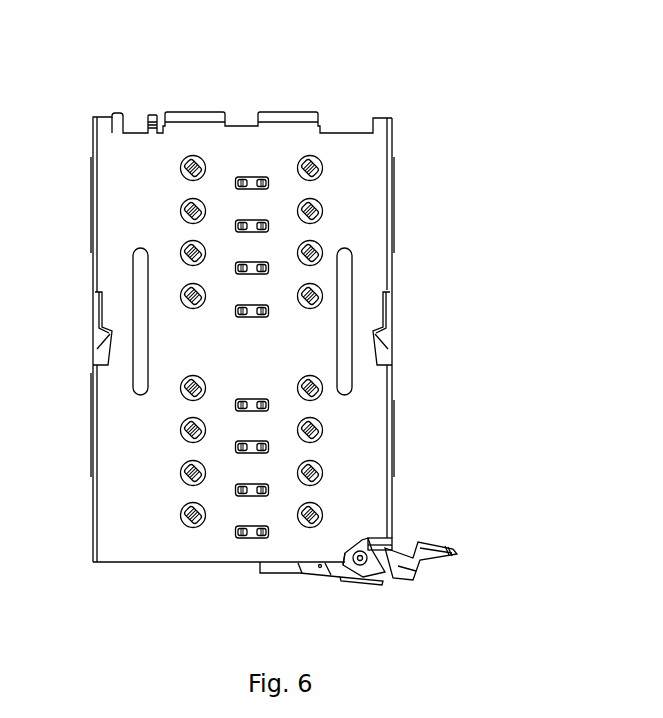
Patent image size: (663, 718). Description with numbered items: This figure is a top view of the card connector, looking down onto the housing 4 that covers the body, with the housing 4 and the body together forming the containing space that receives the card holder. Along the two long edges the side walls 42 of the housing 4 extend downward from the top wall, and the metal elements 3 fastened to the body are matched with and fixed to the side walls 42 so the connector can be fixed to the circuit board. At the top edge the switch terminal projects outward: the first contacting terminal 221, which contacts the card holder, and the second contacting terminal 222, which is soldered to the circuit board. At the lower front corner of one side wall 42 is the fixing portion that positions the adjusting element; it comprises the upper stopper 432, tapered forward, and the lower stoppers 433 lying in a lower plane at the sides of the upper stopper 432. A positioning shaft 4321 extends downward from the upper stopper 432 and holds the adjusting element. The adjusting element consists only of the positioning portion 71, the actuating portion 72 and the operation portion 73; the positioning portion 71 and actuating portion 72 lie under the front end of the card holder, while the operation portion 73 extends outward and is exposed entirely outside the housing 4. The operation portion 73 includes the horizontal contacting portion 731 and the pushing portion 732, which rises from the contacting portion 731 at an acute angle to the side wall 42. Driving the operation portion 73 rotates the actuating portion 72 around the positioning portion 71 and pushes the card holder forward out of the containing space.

The metal element 3 is at (253, 313).
The housing 4 is at (412, 328).
The side wall 42 is at (388, 482).
The first contacting terminal 221 is at (118, 118).
The second contacting terminal 222 is at (210, 83).
The lower stopper 433 is at (385, 545).
The upper stopper 432 is at (370, 578).
The positioning shaft 4321 is at (363, 560).
The actuating portion 72 is at (278, 567).
The positioning portion 71 is at (328, 567).
The operation portion 73 is at (451, 575).
The contacting portion 731 is at (422, 562).
The pushing portion 732 is at (447, 555).